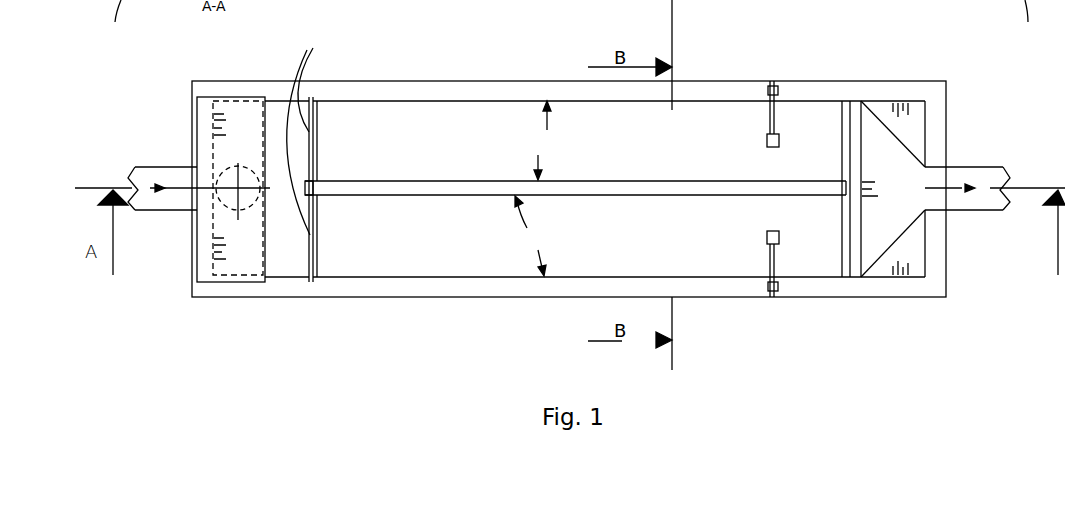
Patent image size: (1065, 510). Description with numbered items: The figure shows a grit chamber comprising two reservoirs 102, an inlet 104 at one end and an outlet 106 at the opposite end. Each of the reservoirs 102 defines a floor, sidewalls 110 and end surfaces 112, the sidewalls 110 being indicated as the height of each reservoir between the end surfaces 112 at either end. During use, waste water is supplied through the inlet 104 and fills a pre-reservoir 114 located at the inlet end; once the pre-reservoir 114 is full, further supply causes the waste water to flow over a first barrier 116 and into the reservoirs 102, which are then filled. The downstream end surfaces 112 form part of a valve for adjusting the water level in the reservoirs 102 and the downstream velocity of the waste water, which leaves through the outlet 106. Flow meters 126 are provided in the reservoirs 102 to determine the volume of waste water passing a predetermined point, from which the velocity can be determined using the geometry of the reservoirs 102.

The reservoirs 102 is at (483, 151).
The inlet 104 is at (148, 172).
The outlet 106 is at (990, 168).
The sidewalls 110 is at (537, 188).
The end surfaces 112 is at (318, 132).
The pre-reservoir 114 is at (288, 230).
The first barrier 116 is at (313, 131).
The flow meters 126 is at (767, 238).